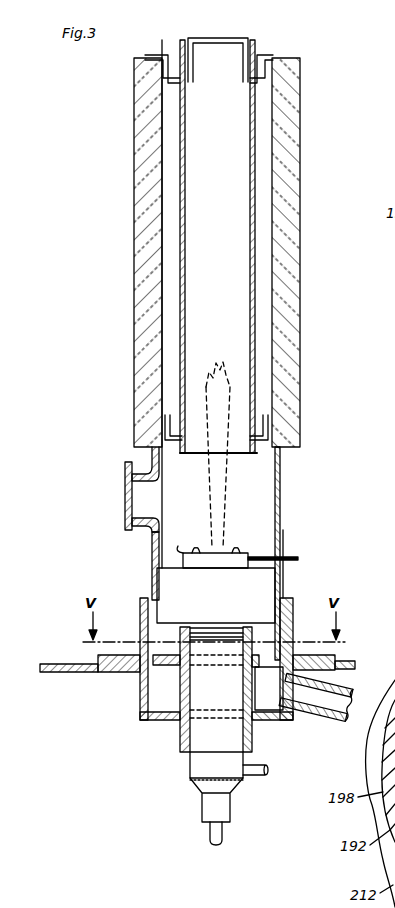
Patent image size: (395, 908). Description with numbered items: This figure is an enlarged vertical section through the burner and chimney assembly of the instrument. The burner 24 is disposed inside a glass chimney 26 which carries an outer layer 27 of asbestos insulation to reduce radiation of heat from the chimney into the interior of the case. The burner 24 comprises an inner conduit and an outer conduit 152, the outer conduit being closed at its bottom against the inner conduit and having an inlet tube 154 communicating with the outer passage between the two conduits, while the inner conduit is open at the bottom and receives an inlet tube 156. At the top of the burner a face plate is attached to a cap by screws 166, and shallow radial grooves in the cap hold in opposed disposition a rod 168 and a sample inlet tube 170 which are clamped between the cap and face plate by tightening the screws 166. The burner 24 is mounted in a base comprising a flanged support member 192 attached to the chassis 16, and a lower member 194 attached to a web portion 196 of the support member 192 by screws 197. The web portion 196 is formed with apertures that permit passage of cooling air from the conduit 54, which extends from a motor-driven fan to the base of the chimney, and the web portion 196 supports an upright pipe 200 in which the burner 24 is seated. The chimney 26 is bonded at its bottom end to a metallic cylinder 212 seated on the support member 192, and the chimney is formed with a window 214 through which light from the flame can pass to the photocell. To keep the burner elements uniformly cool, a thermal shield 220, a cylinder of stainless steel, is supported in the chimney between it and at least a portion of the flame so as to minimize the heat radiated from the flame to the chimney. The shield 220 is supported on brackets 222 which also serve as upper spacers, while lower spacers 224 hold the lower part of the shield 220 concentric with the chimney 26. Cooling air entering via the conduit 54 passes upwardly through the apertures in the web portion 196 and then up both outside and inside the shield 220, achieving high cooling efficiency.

The chassis 16 is at (55, 674).
The burner 24 is at (268, 583).
The glass chimney 26 is at (236, 252).
The outer layer of asbestos 27 is at (298, 113).
The conduit 54 is at (325, 718).
The outer conduit 152 is at (191, 771).
The inlet tube 154 is at (258, 776).
The inlet tube 156 is at (222, 837).
The screws 166 is at (240, 549).
The rod 168 is at (178, 549).
The sample inlet tube 170 is at (289, 557).
The flanged support member 192 is at (292, 607).
The lower member 194 is at (140, 716).
The web portion 196 is at (162, 663).
The screws 197 is at (183, 724).
The upright pipe 200 is at (253, 742).
The metallic cylinder 212 is at (152, 573).
The window 214 is at (128, 492).
The thermal shield 220 is at (256, 50).
The brackets 222 is at (283, 56).
The lower spacers 224 is at (268, 423).